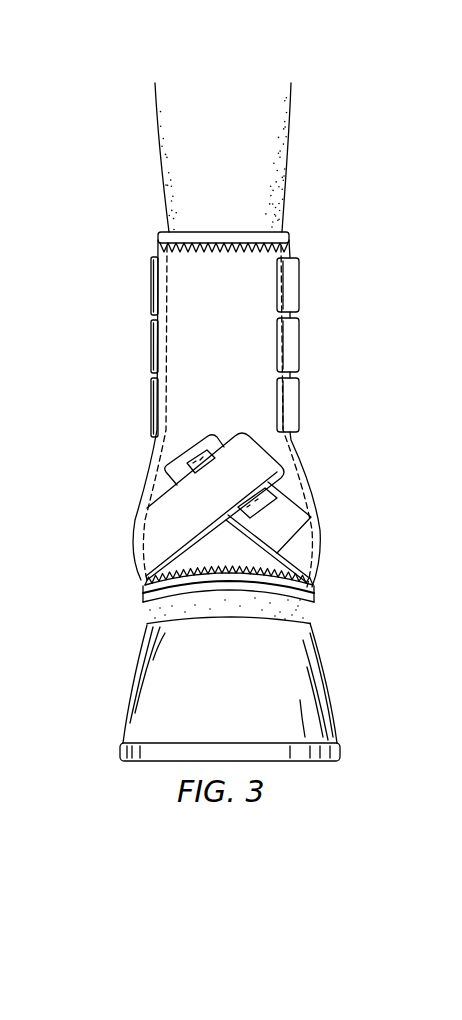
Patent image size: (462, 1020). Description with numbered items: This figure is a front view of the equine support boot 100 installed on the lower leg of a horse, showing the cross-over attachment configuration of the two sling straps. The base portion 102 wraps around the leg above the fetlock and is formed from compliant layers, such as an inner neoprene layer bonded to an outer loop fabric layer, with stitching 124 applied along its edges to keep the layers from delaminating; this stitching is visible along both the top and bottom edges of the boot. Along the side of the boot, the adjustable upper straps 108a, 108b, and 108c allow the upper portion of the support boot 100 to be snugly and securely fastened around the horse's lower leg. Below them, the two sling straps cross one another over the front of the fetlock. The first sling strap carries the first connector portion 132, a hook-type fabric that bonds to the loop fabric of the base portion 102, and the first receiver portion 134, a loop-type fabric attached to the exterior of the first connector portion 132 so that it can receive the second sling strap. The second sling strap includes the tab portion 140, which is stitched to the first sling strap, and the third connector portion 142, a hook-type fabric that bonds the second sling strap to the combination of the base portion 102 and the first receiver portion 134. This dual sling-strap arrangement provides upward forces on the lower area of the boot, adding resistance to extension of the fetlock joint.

The equine support boot 100 is at (134, 271).
The base portion 102 is at (243, 329).
The upper strap 108a is at (300, 284).
The upper strap 108b is at (300, 343).
The upper strap 108c is at (300, 402).
The stitching 124 is at (291, 249).
The first connector portion 132 is at (283, 510).
The first receiver portion 134 is at (200, 452).
The tab portion 140 is at (310, 553).
The third connector portion 142 is at (246, 443).